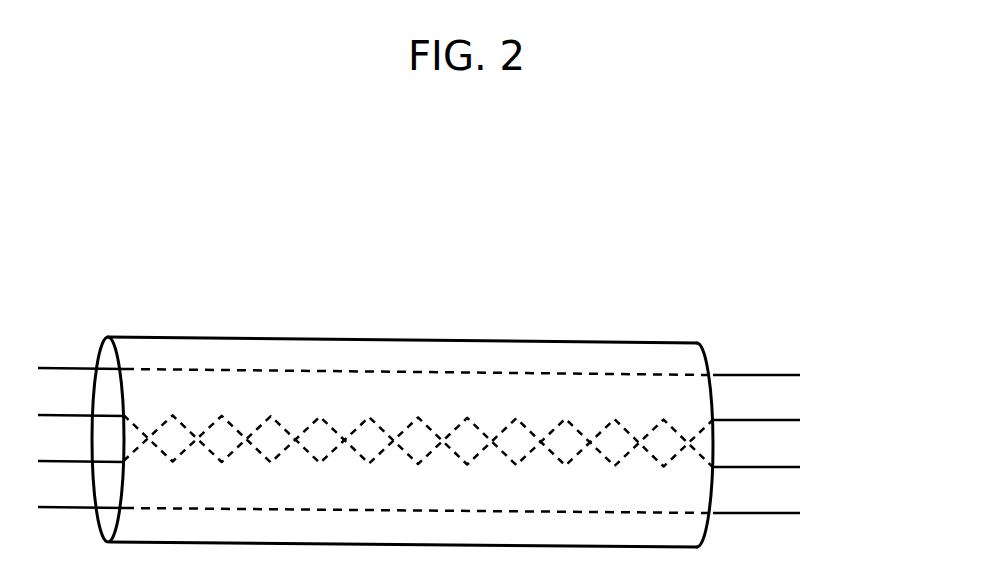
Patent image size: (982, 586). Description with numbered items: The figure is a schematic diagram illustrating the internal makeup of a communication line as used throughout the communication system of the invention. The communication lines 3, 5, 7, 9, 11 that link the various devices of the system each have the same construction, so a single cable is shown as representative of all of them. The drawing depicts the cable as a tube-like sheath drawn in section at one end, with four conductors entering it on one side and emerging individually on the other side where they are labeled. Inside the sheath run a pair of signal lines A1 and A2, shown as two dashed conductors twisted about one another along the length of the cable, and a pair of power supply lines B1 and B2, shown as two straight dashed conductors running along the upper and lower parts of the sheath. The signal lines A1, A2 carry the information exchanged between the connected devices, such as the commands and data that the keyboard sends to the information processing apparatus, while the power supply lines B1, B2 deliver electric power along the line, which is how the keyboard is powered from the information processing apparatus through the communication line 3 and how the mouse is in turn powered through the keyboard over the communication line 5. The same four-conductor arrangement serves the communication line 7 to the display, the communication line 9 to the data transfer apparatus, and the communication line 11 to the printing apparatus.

The communication line 3 is at (375, 412).
The communication line 5 is at (375, 412).
The communication line 7 is at (375, 412).
The communication line 9 is at (375, 412).
The communication line 11 is at (363, 397).
The power supply line B1 is at (773, 373).
The signal line A1 is at (773, 419).
The signal line A2 is at (772, 469).
The power supply line B2 is at (772, 515).